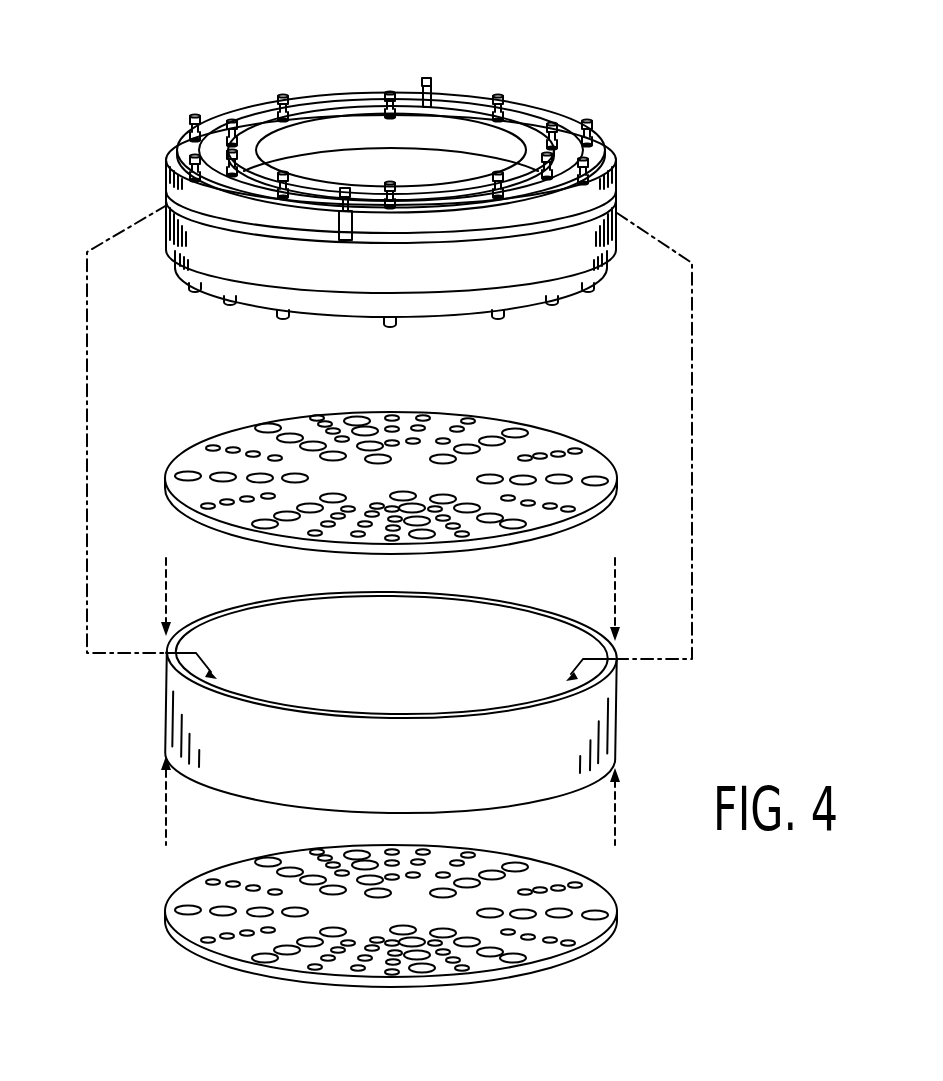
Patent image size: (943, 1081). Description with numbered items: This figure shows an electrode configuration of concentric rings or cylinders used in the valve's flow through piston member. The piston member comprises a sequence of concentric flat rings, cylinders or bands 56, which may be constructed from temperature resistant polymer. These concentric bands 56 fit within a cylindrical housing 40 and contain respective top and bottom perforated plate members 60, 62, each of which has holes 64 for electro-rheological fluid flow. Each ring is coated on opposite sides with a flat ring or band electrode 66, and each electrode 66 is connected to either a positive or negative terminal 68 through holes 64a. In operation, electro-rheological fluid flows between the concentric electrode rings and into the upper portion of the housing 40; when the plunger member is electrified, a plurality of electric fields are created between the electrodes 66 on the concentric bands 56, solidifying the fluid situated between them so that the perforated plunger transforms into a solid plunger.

The cylindrical housing 40 is at (166, 716).
The concentric flat rings, cylinders or bands 56 is at (527, 128).
The top perforated plate member 60 is at (553, 432).
The bottom perforated plate member 62 is at (407, 980).
The holes 64 is at (180, 477).
The holes 64a is at (395, 413).
The flat ring or band electrode 66 is at (292, 150).
The positive or negative terminal 68 is at (425, 83).